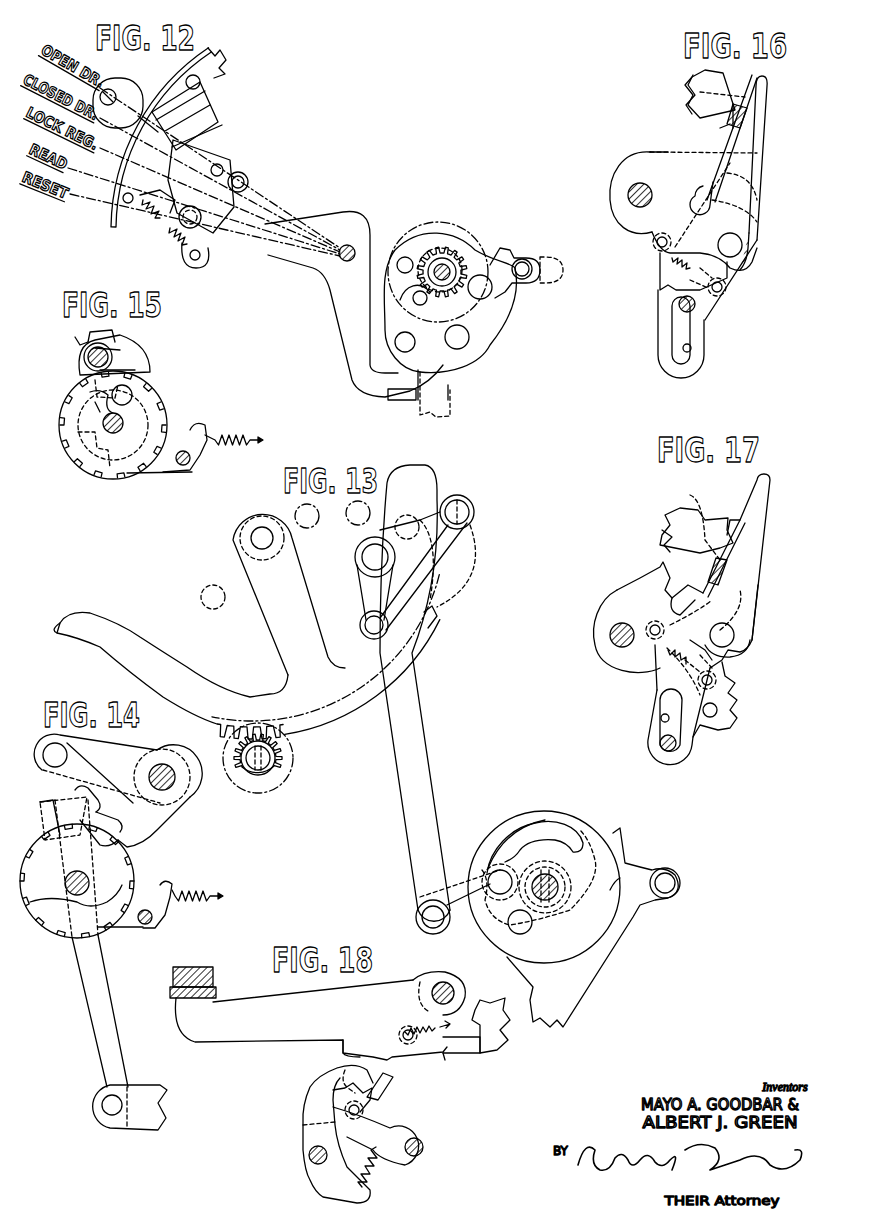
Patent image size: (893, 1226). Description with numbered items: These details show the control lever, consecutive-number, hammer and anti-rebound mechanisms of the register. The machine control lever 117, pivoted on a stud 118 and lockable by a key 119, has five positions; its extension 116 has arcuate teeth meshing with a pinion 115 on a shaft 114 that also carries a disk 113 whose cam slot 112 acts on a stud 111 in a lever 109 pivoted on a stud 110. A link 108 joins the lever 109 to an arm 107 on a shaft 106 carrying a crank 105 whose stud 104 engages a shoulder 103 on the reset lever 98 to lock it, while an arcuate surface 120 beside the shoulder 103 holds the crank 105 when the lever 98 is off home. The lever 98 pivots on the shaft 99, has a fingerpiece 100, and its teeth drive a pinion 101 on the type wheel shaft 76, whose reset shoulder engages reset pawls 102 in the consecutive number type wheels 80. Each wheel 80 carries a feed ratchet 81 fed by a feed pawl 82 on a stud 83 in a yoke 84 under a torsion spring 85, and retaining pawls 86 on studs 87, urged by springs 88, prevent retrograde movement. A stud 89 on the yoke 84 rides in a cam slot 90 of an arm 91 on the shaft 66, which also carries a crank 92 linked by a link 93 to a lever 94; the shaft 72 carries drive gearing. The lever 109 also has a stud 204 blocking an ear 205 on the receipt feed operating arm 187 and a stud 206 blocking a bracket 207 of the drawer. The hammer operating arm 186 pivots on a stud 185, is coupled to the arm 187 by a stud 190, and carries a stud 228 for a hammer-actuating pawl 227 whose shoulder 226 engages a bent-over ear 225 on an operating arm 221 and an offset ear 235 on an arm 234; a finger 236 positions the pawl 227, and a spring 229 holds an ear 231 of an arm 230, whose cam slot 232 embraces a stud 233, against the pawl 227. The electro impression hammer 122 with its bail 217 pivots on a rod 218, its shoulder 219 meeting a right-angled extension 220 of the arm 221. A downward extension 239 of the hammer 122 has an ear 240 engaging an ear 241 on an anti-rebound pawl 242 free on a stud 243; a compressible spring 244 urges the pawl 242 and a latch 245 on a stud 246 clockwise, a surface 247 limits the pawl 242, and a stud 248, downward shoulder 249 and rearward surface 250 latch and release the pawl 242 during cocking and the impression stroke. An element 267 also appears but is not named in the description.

In FIG. 14, the shaft 66 is at (172, 787).
In FIG. 13, the shaft 72 is at (350, 527).
In FIG. 15, the type wheel shaft 76 is at (122, 435).
In FIG. 13, the type wheel shaft 76 is at (268, 762).
In FIG. 14, the type wheel shaft 76 is at (66, 878).
In FIG. 15, the consecutive number type wheels 80 is at (166, 408).
In FIG. 14, the consecutive number type wheels 80 is at (62, 935).
In FIG. 15, the feed ratchet 81 is at (160, 392).
In FIG. 15, the feed pawl 82 is at (135, 357).
In FIG. 15, the stud 83 is at (85, 358).
In FIG. 15, the yoke 84 is at (112, 336).
In FIG. 14, the yoke 84 is at (42, 798).
In FIG. 15, the torsion spring 85 is at (77, 340).
In FIG. 15, the retaining pawl 86 is at (200, 452).
In FIG. 14, the retaining pawl 86 is at (160, 910).
In FIG. 15, the stud 87 is at (191, 474).
In FIG. 14, the stud 87 is at (140, 930).
In FIG. 15, the springs 88 is at (232, 430).
In FIG. 14, the springs 88 is at (192, 890).
In FIG. 14, the stud 89 is at (135, 843).
In FIG. 14, the cam slot 90 is at (92, 790).
In FIG. 14, the arm 91 is at (150, 822).
In FIG. 14, the crank 92 is at (128, 750).
In FIG. 14, the link 93 is at (93, 1000).
In FIG. 14, the lever 94 is at (147, 1122).
In FIG. 13, the consecutive number reset lever 98 is at (168, 672).
In FIG. 13, the shaft 99 is at (252, 540).
In FIG. 13, the fingerpiece 100 is at (60, 622).
In FIG. 13, the pinion 101 is at (282, 742).
In FIG. 15, the reset pawls 102 is at (90, 405).
In FIG. 13, the shoulder 103 is at (368, 617).
In FIG. 13, the stud 104 is at (367, 634).
In FIG. 13, the crank 105 is at (462, 548).
In FIG. 13, the shaft 106 is at (474, 512).
In FIG. 13, the arm 107 is at (452, 567).
In FIG. 13, the link 108 is at (425, 740).
In FIG. 12, the lever 109 is at (515, 256).
In FIG. 13, the lever 109 is at (632, 912).
In FIG. 13, the stud 110 is at (497, 872).
In FIG. 13, the stud 111 is at (524, 930).
In FIG. 12, the cam slot 112 is at (438, 230).
In FIG. 13, the cam slot 112 is at (517, 843).
In FIG. 12, the disk 113 is at (414, 232).
In FIG. 13, the disk 113 is at (549, 816).
In FIG. 12, the shaft 114 is at (432, 266).
In FIG. 13, the shaft 114 is at (556, 882).
In FIG. 12, the pinion 115 is at (462, 258).
In FIG. 12, the extension 116 is at (485, 262).
In FIG. 12, the machine control lever 117 is at (218, 78).
In FIG. 12, the stud 118 is at (347, 244).
In FIG. 12, the key 119 is at (133, 85).
In FIG. 13, the arcuate surface 120 is at (392, 530).
In FIG. 18, the electro impression hammer 122 is at (295, 1002).
In FIG. 16, the stud 185 is at (630, 190).
In FIG. 17, the stud 185 is at (610, 633).
In FIG. 16, the impression hammer operating arm 186 is at (648, 165).
In FIG. 17, the impression hammer operating arm 186 is at (612, 604).
In FIG. 12, the receipt feed operating arm 187 is at (448, 383).
In FIG. 17, the stud 190 is at (716, 708).
In FIG. 12, the stud 204 is at (449, 398).
In FIG. 12, the bent-over ear 205 is at (392, 396).
In FIG. 12, the stud 206 is at (525, 280).
In FIG. 13, the stud 206 is at (668, 868).
In FIG. 12, the bracket 207 is at (556, 258).
In FIG. 18, the bail 217 is at (195, 1000).
In FIG. 18, the rod 218 is at (430, 995).
In FIG. 18, the shoulder 219 is at (447, 1056).
In FIG. 18, the right-angled extension 220 is at (472, 1050).
In FIG. 16, the operating arm 221 is at (686, 103).
In FIG. 17, the operating arm 221 is at (663, 537).
In FIG. 18, the operating arm 221 is at (493, 1037).
In FIG. 16, the bent-over ear 225 is at (728, 124).
In FIG. 17, the bent-over ear 225 is at (722, 563).
In FIG. 16, the shoulder 226 is at (749, 118).
In FIG. 17, the shoulder 226 is at (741, 518).
In FIG. 16, the hammer-actuating pawl 227 is at (764, 140).
In FIG. 17, the hammer-actuating pawl 227 is at (755, 585).
In FIG. 16, the stud 228 is at (742, 245).
In FIG. 17, the stud 228 is at (736, 637).
In FIG. 16, the spring 229 is at (668, 262).
In FIG. 17, the spring 229 is at (663, 655).
In FIG. 16, the arm 230 is at (712, 302).
In FIG. 17, the arm 230 is at (656, 695).
In FIG. 16, the bent-over ear 231 is at (708, 182).
In FIG. 17, the bent-over ear 231 is at (695, 585).
In FIG. 16, the cam slot 232 is at (692, 350).
In FIG. 17, the cam slot 232 is at (660, 719).
In FIG. 16, the stud 233 is at (696, 312).
In FIG. 17, the stud 233 is at (659, 743).
In FIG. 16, the hammer-operating arm 234 is at (700, 81).
In FIG. 17, the hammer-operating arm 234 is at (688, 514).
In FIG. 16, the bent-over ear 235 is at (762, 82).
In FIG. 17, the bent-over ear 235 is at (702, 510).
In FIG. 16, the upwardly-extending finger 236 is at (766, 96).
In FIG. 17, the upwardly-extending finger 236 is at (768, 478).
In FIG. 18, the downward extension 239 is at (348, 1052).
In FIG. 18, the right-angled ear 240 is at (390, 1083).
In FIG. 18, the ear 241 is at (375, 1100).
In FIG. 18, the anti-rebound pawl 242 is at (425, 1133).
In FIG. 18, the stud 243 is at (425, 1148).
In FIG. 18, the compressible spring 244 is at (378, 1172).
In FIG. 18, the companion latch 245 is at (320, 1105).
In FIG. 18, the stud 246 is at (310, 1158).
In FIG. 18, the surface 247 is at (365, 1110).
In FIG. 18, the stud 248 is at (305, 1125).
In FIG. 18, the downward shoulder 249 is at (338, 1080).
In FIG. 18, the rearward surface 250 is at (395, 1062).
In FIG. 16, the edge 267 is at (762, 178).